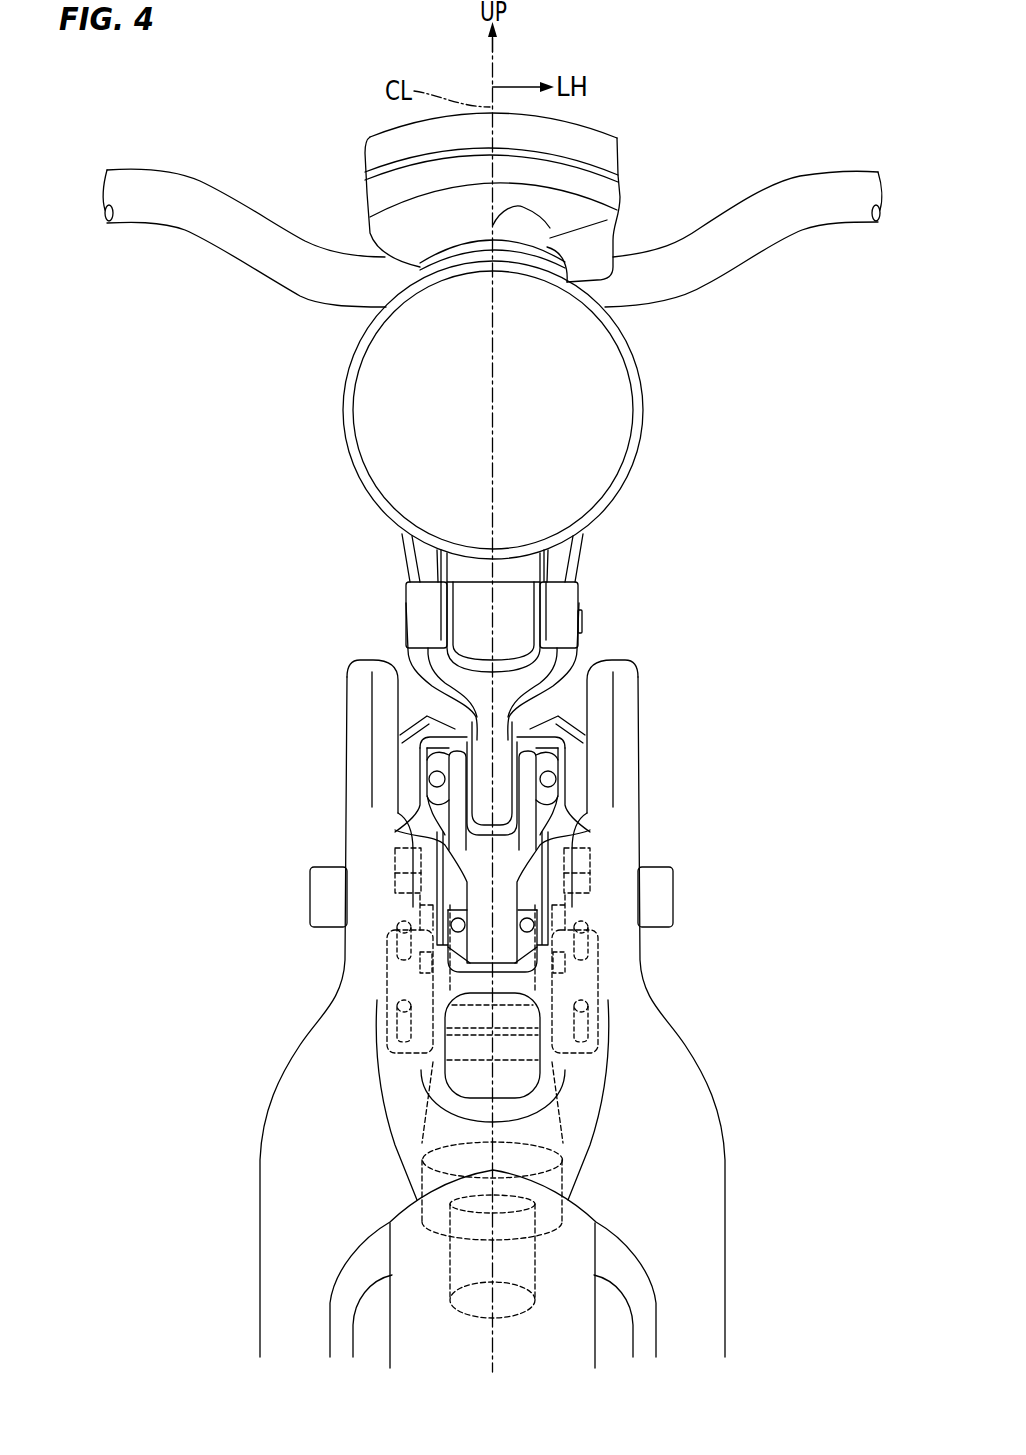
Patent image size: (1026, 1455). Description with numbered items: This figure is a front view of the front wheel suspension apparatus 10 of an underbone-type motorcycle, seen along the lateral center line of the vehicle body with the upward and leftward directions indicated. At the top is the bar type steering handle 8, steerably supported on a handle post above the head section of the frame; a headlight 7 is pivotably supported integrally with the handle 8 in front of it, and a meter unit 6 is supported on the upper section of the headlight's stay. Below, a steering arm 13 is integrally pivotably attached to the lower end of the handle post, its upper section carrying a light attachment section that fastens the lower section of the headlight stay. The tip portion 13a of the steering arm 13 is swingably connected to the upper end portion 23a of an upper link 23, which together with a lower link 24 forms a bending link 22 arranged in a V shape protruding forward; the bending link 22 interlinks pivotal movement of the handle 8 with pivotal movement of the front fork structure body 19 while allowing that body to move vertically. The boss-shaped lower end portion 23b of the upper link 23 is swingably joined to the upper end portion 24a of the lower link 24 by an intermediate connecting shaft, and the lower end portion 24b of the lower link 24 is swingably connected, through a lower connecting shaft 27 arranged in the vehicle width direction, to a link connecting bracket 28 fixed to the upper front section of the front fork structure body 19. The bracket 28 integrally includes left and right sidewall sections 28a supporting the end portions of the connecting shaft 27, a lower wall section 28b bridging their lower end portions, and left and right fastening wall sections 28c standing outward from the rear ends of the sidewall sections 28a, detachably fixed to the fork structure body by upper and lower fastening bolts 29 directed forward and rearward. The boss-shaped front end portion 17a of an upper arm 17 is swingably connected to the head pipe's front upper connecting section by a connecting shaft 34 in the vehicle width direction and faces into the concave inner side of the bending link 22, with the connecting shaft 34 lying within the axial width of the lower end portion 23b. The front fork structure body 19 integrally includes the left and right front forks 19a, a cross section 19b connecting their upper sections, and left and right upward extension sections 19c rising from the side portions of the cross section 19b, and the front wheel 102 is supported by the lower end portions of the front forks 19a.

The meter unit 6 is at (593, 147).
The headlight 7 is at (615, 385).
The handle 8 is at (777, 200).
The front wheel suspension apparatus 10 is at (252, 626).
The steering arm 13 is at (596, 591).
The tip portion of the steering arm 13a is at (517, 603).
The upper arm 17 is at (534, 882).
The front end portion of the upper arm 17a is at (425, 878).
The front fork structure body 19 is at (488, 1014).
The front forks 19a is at (273, 1294).
The cross section 19b is at (538, 1138).
The upward extension sections 19c is at (357, 817).
The bending link 22 is at (510, 700).
The upper link 23 is at (566, 664).
The upper end portion of the upper link 23a is at (412, 597).
The lower end portion of the upper link 23b is at (500, 773).
The lower link 24 is at (495, 844).
The upper end portion of the lower link 24a is at (452, 775).
The lower end portion of the lower link 24b is at (528, 961).
The lower connecting shaft 27 is at (560, 970).
The link connecting bracket 28 is at (504, 1106).
The sidewall sections 28a is at (397, 993).
The lower wall section 28b is at (472, 1056).
The fastening wall sections 28c is at (397, 981).
The fastening bolts 29 is at (393, 950).
The connecting shaft 34 is at (590, 897).
The front wheel 102 is at (583, 1252).